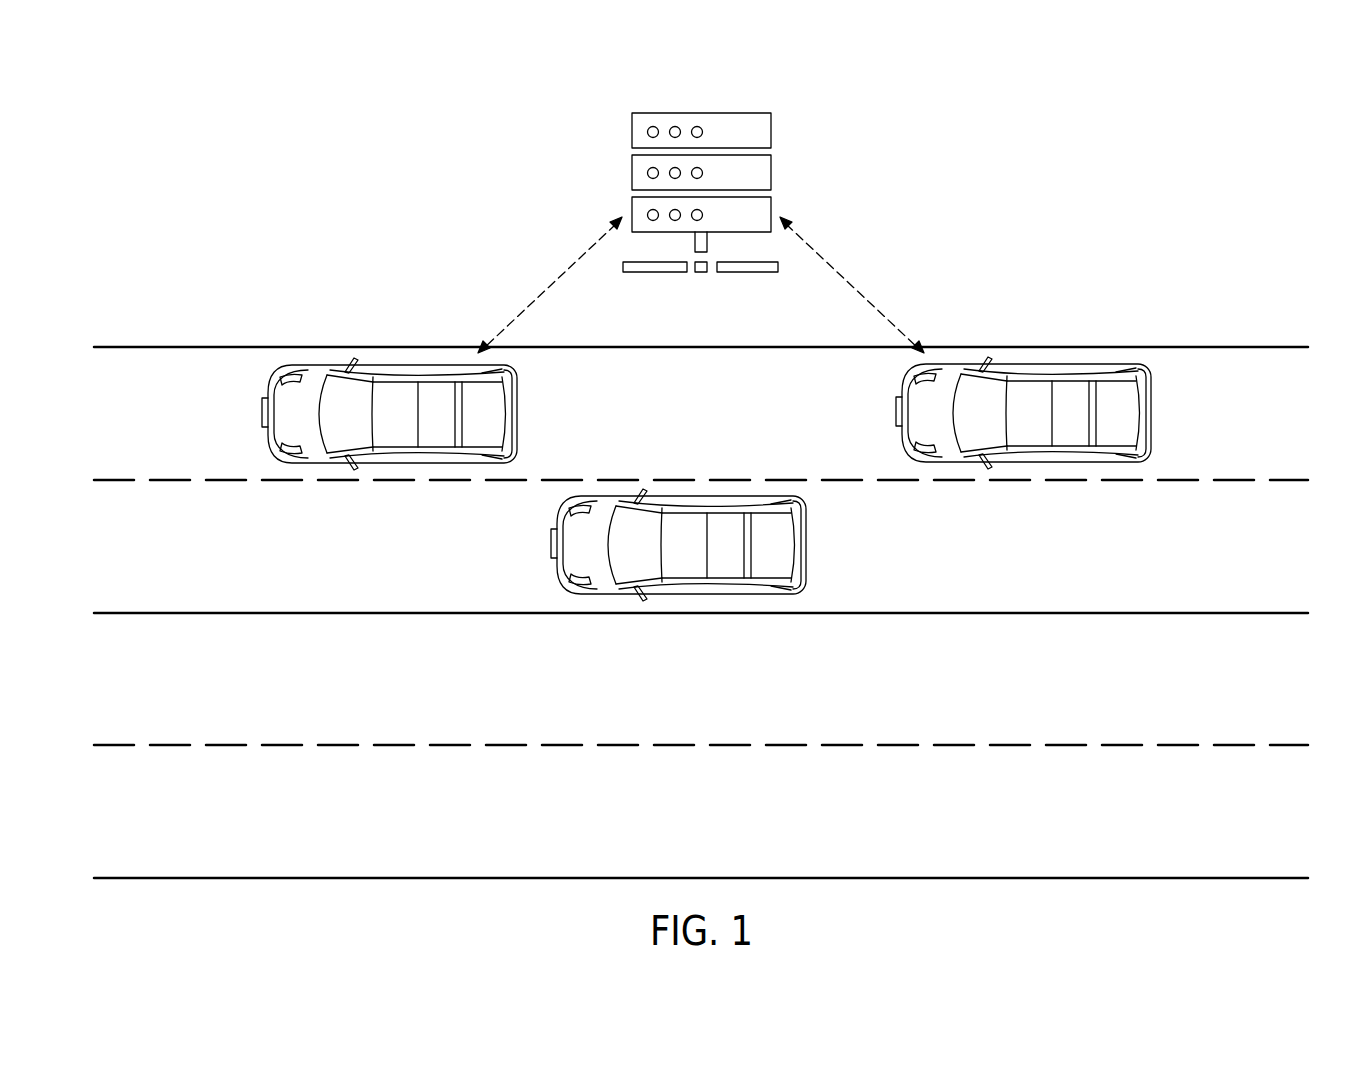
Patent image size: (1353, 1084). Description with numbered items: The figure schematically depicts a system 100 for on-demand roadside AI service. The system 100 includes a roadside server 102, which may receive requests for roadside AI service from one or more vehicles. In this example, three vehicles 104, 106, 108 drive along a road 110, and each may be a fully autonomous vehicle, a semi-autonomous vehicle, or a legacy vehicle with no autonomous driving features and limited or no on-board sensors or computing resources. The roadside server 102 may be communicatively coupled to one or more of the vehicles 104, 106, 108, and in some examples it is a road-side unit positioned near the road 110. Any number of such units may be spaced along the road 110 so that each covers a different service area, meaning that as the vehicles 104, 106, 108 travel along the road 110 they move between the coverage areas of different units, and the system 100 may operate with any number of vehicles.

The system 100 is at (205, 142).
The roadside server 102 is at (702, 113).
The vehicle 104 is at (1152, 412).
The vehicle 106 is at (806, 547).
The vehicle 108 is at (268, 414).
The road 110 is at (243, 335).